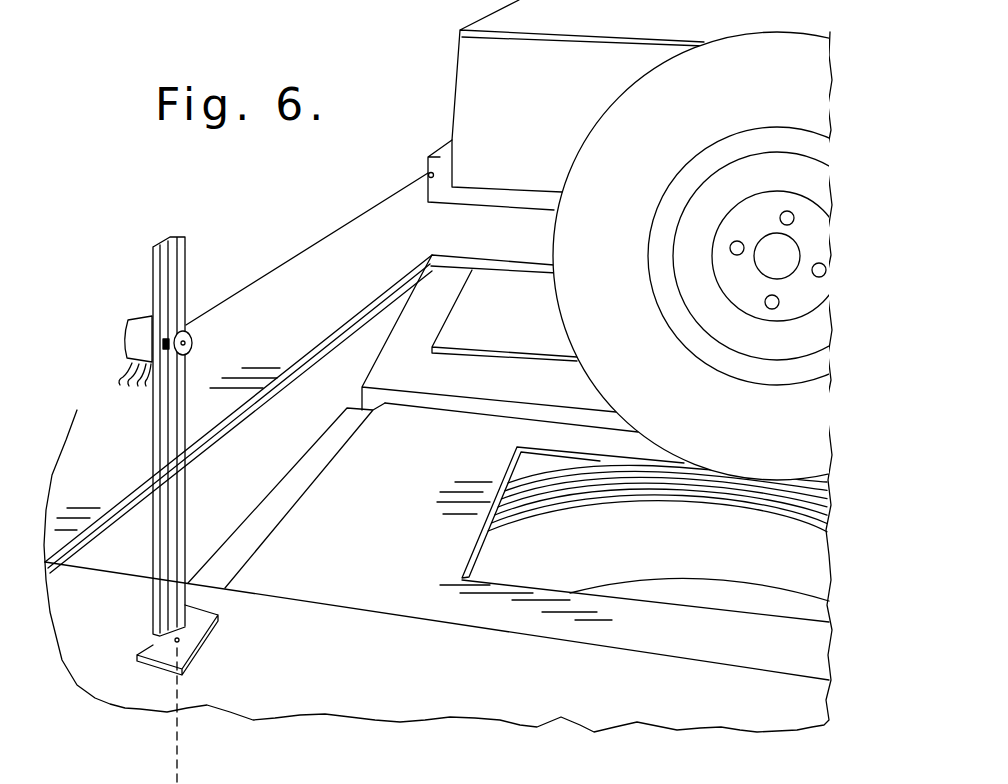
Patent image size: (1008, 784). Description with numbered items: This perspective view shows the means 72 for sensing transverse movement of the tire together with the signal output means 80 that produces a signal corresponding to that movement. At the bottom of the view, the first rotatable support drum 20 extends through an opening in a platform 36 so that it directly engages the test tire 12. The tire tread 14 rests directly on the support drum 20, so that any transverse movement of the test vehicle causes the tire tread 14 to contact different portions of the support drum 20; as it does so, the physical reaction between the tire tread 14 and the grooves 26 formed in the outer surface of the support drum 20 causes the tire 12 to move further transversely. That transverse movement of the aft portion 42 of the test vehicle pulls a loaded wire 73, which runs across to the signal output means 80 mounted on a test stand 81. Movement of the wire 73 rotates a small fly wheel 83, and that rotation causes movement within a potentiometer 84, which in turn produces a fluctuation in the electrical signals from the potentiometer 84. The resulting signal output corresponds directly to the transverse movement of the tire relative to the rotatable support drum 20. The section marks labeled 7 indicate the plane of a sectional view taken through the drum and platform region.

The test tire 12 is at (618, 243).
The tire tread 14 is at (750, 484).
The first rotatable support drum 20 is at (686, 559).
The grooves 26 is at (522, 526).
The platform 36 is at (406, 522).
The aft portion 42 is at (428, 134).
The means for sensing transverse movement 72 is at (307, 241).
The loaded wire 73 is at (332, 233).
The signal output means 80 is at (155, 342).
The test stand 81 is at (152, 435).
The small fly wheel 83 is at (192, 347).
The potentiometer 84 is at (135, 343).
The section line 7- 7 is at (605, 443).